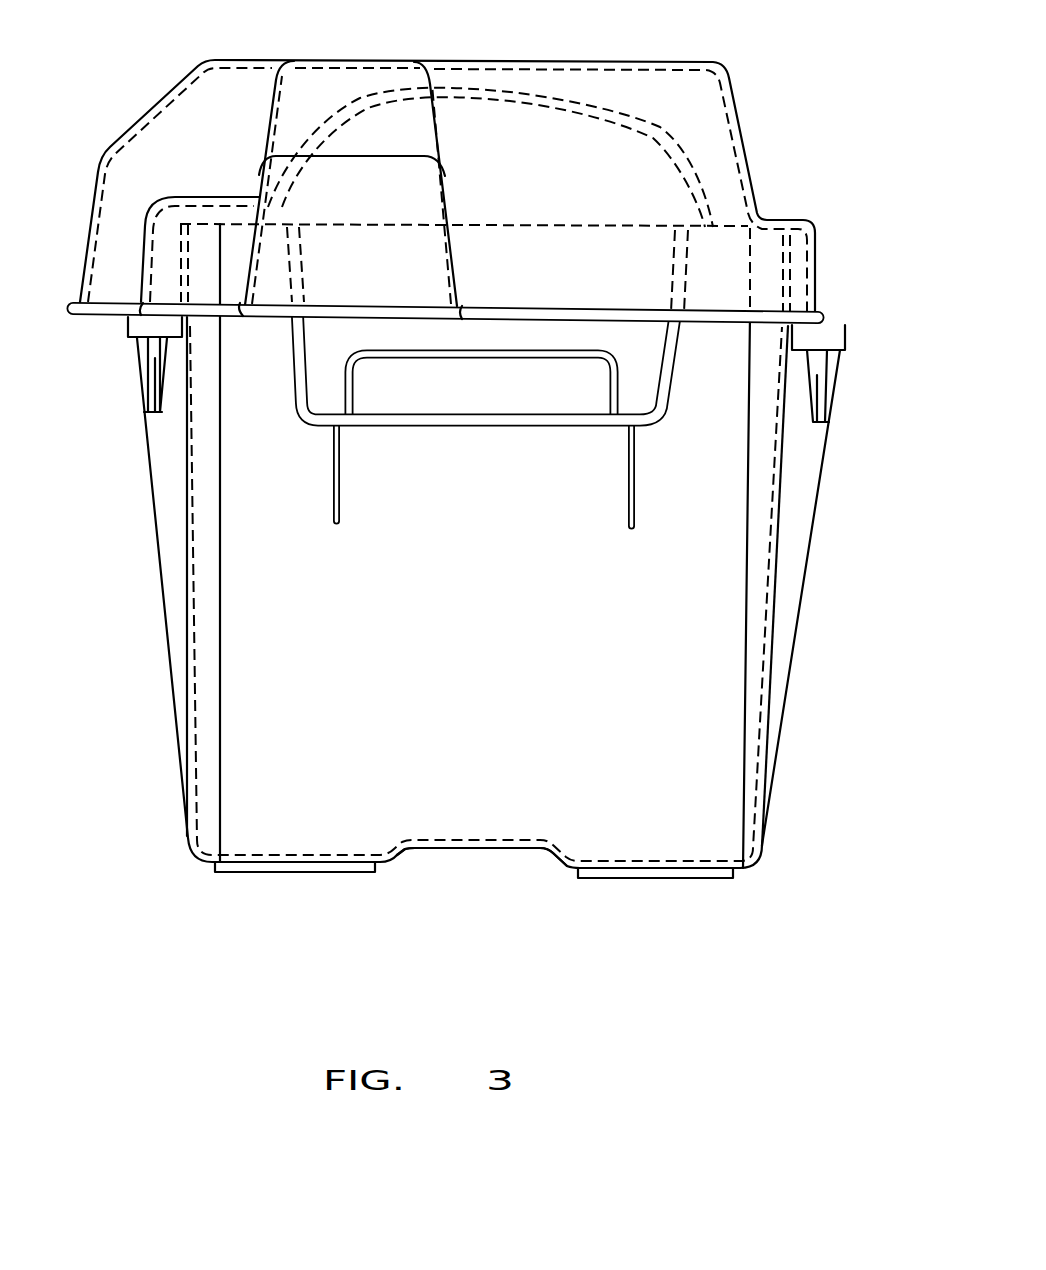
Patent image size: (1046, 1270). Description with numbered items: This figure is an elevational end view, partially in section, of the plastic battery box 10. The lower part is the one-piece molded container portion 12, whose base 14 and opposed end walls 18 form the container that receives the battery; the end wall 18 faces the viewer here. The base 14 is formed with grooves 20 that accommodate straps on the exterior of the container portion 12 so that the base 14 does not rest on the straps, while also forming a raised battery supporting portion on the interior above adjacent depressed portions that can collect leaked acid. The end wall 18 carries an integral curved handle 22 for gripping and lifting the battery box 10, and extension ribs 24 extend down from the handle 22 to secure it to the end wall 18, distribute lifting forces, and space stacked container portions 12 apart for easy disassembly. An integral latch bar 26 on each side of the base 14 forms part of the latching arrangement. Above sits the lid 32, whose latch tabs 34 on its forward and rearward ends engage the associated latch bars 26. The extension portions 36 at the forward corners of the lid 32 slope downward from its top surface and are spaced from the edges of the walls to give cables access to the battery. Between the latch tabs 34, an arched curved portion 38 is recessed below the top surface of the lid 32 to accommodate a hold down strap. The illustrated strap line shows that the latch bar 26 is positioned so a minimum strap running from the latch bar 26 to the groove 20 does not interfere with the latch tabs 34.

The battery box 10 is at (858, 250).
The container portion 12 is at (178, 846).
The base 14 is at (278, 873).
The end walls 18 is at (497, 678).
The grooves 20 is at (473, 850).
The handle 22 is at (463, 398).
The extension ribs 24 is at (341, 494).
The latch bar 26 is at (128, 333).
The lid 32 is at (713, 153).
The latch tabs 34 is at (150, 398).
The extension portions 36 is at (110, 260).
The arched curved portion 38 is at (660, 128).